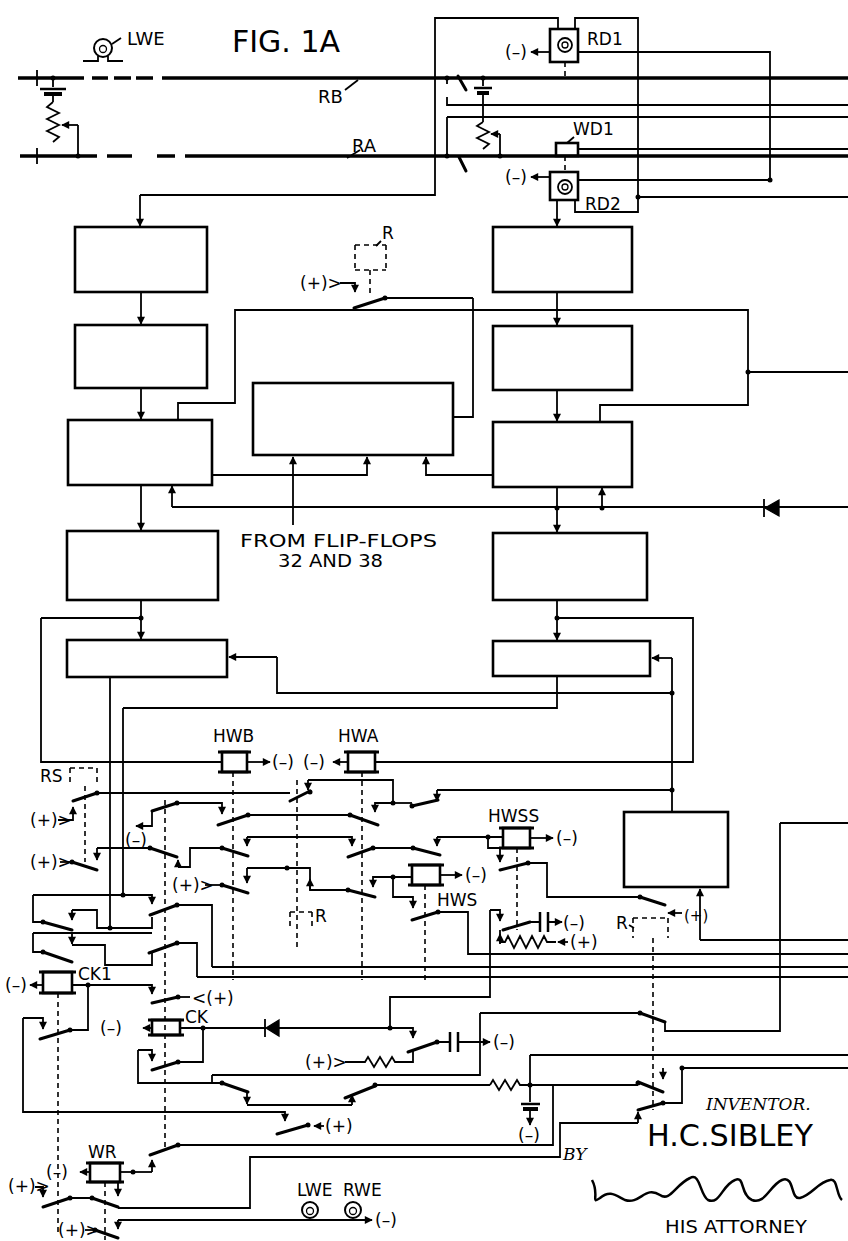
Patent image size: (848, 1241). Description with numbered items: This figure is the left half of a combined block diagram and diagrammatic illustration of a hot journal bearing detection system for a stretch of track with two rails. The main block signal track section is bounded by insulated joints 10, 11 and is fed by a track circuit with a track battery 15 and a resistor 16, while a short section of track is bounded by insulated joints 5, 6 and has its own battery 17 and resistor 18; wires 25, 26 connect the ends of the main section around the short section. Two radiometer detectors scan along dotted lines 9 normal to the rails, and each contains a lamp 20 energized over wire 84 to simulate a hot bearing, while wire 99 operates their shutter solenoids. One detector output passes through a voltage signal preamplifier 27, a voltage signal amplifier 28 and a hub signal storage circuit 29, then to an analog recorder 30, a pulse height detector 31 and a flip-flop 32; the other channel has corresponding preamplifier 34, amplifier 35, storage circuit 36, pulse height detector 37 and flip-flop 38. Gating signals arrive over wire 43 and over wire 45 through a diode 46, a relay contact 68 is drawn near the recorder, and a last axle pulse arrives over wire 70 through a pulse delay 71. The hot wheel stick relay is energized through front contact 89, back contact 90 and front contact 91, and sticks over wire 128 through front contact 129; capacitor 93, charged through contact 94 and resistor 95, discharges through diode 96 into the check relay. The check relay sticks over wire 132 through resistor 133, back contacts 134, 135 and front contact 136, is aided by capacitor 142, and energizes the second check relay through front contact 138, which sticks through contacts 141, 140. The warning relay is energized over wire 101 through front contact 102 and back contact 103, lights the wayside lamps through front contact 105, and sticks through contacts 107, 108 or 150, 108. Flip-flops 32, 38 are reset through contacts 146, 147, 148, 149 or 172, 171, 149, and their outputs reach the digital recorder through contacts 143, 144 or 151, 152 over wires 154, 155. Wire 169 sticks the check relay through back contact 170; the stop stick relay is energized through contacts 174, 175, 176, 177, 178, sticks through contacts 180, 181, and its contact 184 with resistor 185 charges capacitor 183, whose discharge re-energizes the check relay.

The insulated joint 5 is at (460, 76).
The insulated joint 6 is at (462, 170).
The dotted lines 9 is at (572, 72).
The insulated joint 10 is at (37, 75).
The insulated joint 11 is at (37, 164).
The track battery 15 is at (67, 92).
The resistor 16 is at (46, 125).
The battery 17 is at (497, 94).
The resistor 18 is at (478, 131).
The lamp 20 is at (550, 41).
The wire 25 is at (806, 119).
The wire 26 is at (800, 109).
The voltage signal preamplifier 27 is at (632, 271).
The voltage signal amplifier 28 is at (632, 367).
The hub signal storage circuit 29 is at (633, 462).
The analog recorder 30 is at (345, 383).
The pulse height detector 31 is at (647, 572).
The flip-flop 32 is at (532, 640).
The voltage signal preamplifier 34 is at (74, 278).
The voltage signal amplifier 35 is at (74, 373).
The hub signal storage circuit 36 is at (68, 463).
The pulse height detector 37 is at (67, 571).
The flip-flop 38 is at (165, 641).
The wire 43 is at (815, 375).
The wire 45 is at (820, 506).
The diode 46 is at (777, 497).
The relay contact 68 is at (382, 297).
The wire 70 is at (795, 940).
The pulse delay 71 is at (729, 844).
The wire 84 is at (798, 181).
The front contact of relay HWB 89 is at (236, 893).
The back contact of relay R 90 is at (364, 858).
The front contact of relay HWA 91 is at (323, 893).
The capacitor 93 is at (463, 1053).
The contact of relay HWS 94 is at (440, 1025).
The resistor 95 is at (379, 1052).
The diode 96 is at (286, 1039).
The wire 99 is at (800, 199).
The wire 101 is at (826, 1069).
The front contact of relay R 102 is at (648, 1082).
The back contact of relay CK 103 is at (336, 1130).
The front contact of relay WR 105 is at (228, 1227).
The back contact of relay R 107 is at (642, 1108).
The front contact of relay WR 108 is at (354, 1166).
The wire 128 is at (716, 954).
The front contact of relay HWS 129 is at (620, 932).
The wire 132 is at (798, 1057).
The resistor 133 is at (520, 1073).
The back contact of relay HWA 134 is at (417, 1100).
The back contact of relay HWB 135 is at (276, 1093).
The front contact of relay CK 136 is at (180, 1055).
The front contact of relay CK 138 is at (131, 997).
The front contact of relay CK1 140 is at (154, 1053).
The front contact of relay R 141 is at (282, 1127).
The capacitor 142 is at (520, 1108).
The contact of relay CK 143 is at (167, 931).
The contact of relay CK 144 is at (176, 959).
The back contact of relay CK 146 is at (179, 815).
The front contact of relay HWB 147 is at (240, 821).
The front contact of relay HWA 148 is at (383, 818).
The front contact of relay HWS 149 is at (532, 803).
The front contact of relay CK1 150 is at (50, 1208).
The front contact of relay CK1 151 is at (92, 912).
The front contact of relay CK1 152 is at (82, 953).
The wire 154 is at (305, 968).
The wire 155 is at (840, 978).
The wire 169 is at (802, 824).
The back contact of relay R 170 is at (656, 1018).
The front contact of relay R 171 is at (341, 793).
The back contact of relay RS 172 is at (70, 797).
The front contact of relay RS 174 is at (79, 870).
The back contact of relay CK 175 is at (159, 847).
The front contact of relay HWB 176 is at (286, 851).
The front contact of relay HWA 177 is at (368, 854).
The front contact of relay HWS 178 is at (457, 850).
The back contact of relay R 180 is at (670, 900).
The front contact of relay HWSS 181 is at (564, 867).
The capacitor 183 is at (559, 911).
The contact of relay HWSS 184 is at (523, 933).
The resistor 185 is at (538, 950).